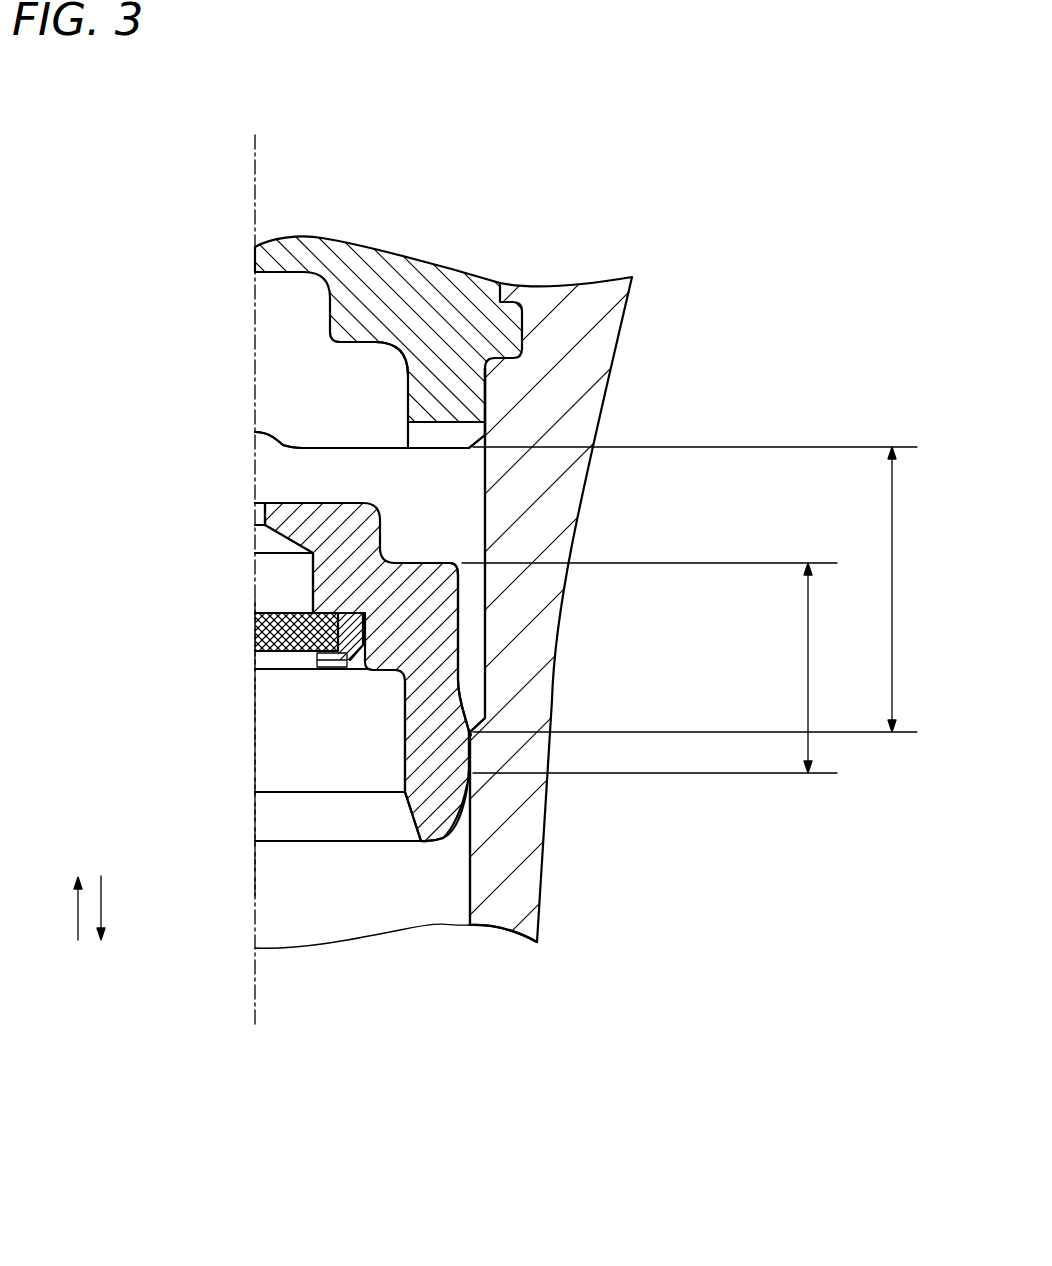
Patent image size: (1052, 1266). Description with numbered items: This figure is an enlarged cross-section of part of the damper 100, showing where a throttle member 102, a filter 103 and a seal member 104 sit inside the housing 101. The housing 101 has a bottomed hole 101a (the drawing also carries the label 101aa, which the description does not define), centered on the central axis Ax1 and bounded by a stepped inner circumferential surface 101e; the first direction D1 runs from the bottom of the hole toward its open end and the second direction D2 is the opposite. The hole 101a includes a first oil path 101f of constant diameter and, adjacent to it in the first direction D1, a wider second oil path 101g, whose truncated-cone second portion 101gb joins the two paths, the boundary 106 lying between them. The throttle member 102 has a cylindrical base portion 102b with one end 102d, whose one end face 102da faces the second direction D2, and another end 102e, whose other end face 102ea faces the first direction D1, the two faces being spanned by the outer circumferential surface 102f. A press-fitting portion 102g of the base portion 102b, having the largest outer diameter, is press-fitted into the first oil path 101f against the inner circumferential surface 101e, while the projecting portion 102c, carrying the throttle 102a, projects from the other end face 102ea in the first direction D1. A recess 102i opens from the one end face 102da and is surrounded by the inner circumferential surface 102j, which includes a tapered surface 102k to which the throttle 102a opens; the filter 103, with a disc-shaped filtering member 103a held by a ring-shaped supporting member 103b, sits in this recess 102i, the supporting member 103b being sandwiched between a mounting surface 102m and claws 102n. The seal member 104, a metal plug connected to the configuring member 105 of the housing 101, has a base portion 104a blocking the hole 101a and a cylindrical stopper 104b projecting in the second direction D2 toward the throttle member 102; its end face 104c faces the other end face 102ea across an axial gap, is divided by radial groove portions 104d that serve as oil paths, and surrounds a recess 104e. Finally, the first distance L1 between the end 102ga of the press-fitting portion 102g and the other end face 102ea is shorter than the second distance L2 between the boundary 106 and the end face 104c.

The damper 100 is at (618, 127).
The housing 101 is at (533, 703).
The configuring member 105 is at (632, 311).
The hole 101a is at (362, 1027).
The inner surface portion 101aa is at (307, 932).
The inner circumferential surface 101e is at (472, 905).
The first oil path 101f is at (520, 880).
The second oil path 101g is at (634, 543).
The second portion 101gb is at (477, 727).
The throttle member 102 is at (405, 783).
The base portion 102b is at (362, 672).
The throttle 102a is at (256, 526).
The projecting portion 102c is at (211, 481).
The one end 102d is at (463, 972).
The one end face 102da is at (423, 843).
The other end 102e is at (590, 551).
The other end face 102ea is at (432, 560).
The outer circumferential surface 102f is at (460, 619).
The press-fitting portion 102g is at (591, 780).
The end 102ga is at (452, 841).
The recess 102i is at (275, 778).
The inner circumferential surface 102j is at (405, 770).
The tapered surface 102k is at (303, 553).
The mounting surface 102m is at (352, 668).
The claws 102n is at (317, 658).
The filter 103 is at (195, 634).
The filtering member 103a is at (245, 633).
The supporting member 103b is at (330, 614).
The seal member 104 is at (411, 330).
The base portion 104a is at (472, 290).
The stopper 104b is at (485, 397).
The end face 104c is at (438, 450).
The groove portions 104d is at (258, 441).
The recess 104e is at (360, 368).
The boundary 106 is at (471, 733).
The first distance L1 is at (653, 668).
The second distance L2 is at (699, 589).
The first direction D1 is at (75, 901).
The second direction D2 is at (103, 903).
The central axis Ax1 is at (255, 990).